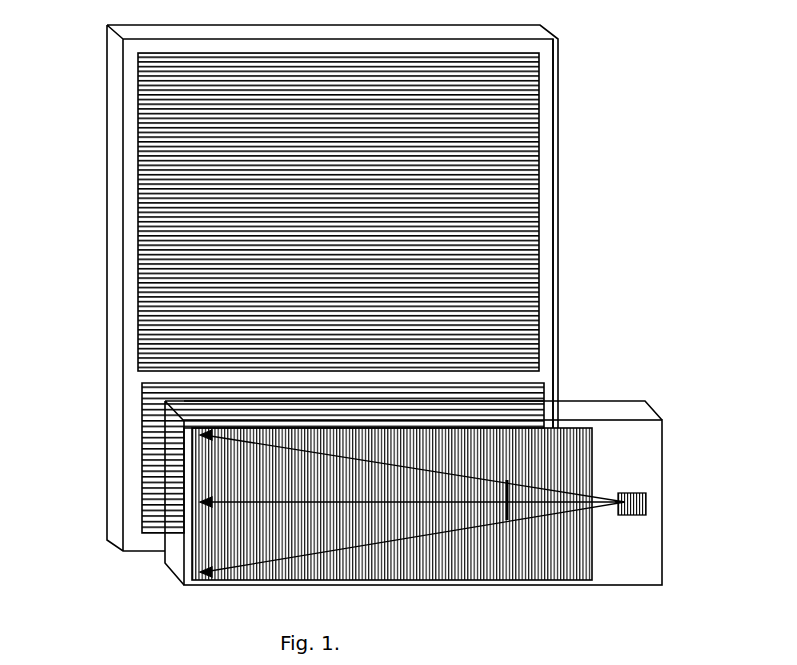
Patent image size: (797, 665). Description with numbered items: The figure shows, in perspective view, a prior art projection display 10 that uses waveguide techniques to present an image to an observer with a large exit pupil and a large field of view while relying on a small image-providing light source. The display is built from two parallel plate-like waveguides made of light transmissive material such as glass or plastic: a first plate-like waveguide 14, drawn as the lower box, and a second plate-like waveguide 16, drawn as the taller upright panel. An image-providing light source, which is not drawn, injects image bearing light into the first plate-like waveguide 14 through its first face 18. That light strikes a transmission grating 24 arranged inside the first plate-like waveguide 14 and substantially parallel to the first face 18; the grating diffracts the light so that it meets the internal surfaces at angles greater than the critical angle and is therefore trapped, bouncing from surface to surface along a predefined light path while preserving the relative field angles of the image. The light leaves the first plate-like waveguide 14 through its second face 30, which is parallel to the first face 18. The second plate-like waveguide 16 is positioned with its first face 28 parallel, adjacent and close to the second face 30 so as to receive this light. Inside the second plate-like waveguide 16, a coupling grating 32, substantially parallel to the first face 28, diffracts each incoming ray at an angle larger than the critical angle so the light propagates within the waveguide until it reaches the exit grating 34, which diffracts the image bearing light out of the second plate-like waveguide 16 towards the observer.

The projection display 10 is at (391, 334).
The second plate-like waveguide 16 is at (552, 57).
The first face 28 is at (553, 313).
The exit grating 34 is at (178, 243).
The coupling grating 32 is at (145, 433).
The second face 30 is at (600, 400).
The first plate-like waveguide 14 is at (638, 413).
The first face 18 is at (640, 568).
The transmission grating 24 is at (550, 557).